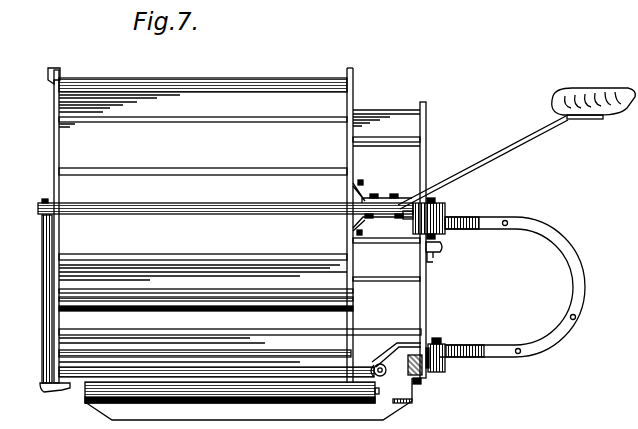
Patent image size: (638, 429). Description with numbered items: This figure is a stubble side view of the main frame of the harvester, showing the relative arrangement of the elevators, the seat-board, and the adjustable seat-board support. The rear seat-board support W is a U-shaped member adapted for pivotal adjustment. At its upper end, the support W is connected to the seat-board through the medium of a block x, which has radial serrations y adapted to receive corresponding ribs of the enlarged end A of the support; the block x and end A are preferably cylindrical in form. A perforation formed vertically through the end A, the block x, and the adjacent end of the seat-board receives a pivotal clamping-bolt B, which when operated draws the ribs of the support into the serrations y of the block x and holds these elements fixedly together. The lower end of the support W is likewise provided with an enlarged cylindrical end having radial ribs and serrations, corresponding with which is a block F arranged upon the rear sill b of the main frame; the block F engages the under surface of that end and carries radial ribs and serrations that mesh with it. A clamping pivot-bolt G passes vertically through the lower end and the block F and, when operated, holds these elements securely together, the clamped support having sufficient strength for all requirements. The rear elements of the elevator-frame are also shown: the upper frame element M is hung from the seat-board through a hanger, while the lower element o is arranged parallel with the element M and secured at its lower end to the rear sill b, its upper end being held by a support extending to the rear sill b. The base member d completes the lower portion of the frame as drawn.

The upper frame element M is at (362, 74).
The lower element o is at (426, 111).
The pivotal clamping-bolt B is at (430, 196).
The block x is at (447, 212).
The radial serrations y is at (412, 215).
The enlarged end A is at (443, 246).
The rear U-shaped support W is at (578, 282).
The clamping pivot-bolt G is at (438, 340).
The block F is at (448, 364).
The rear sill b is at (426, 376).
The base bracket d is at (80, 392).